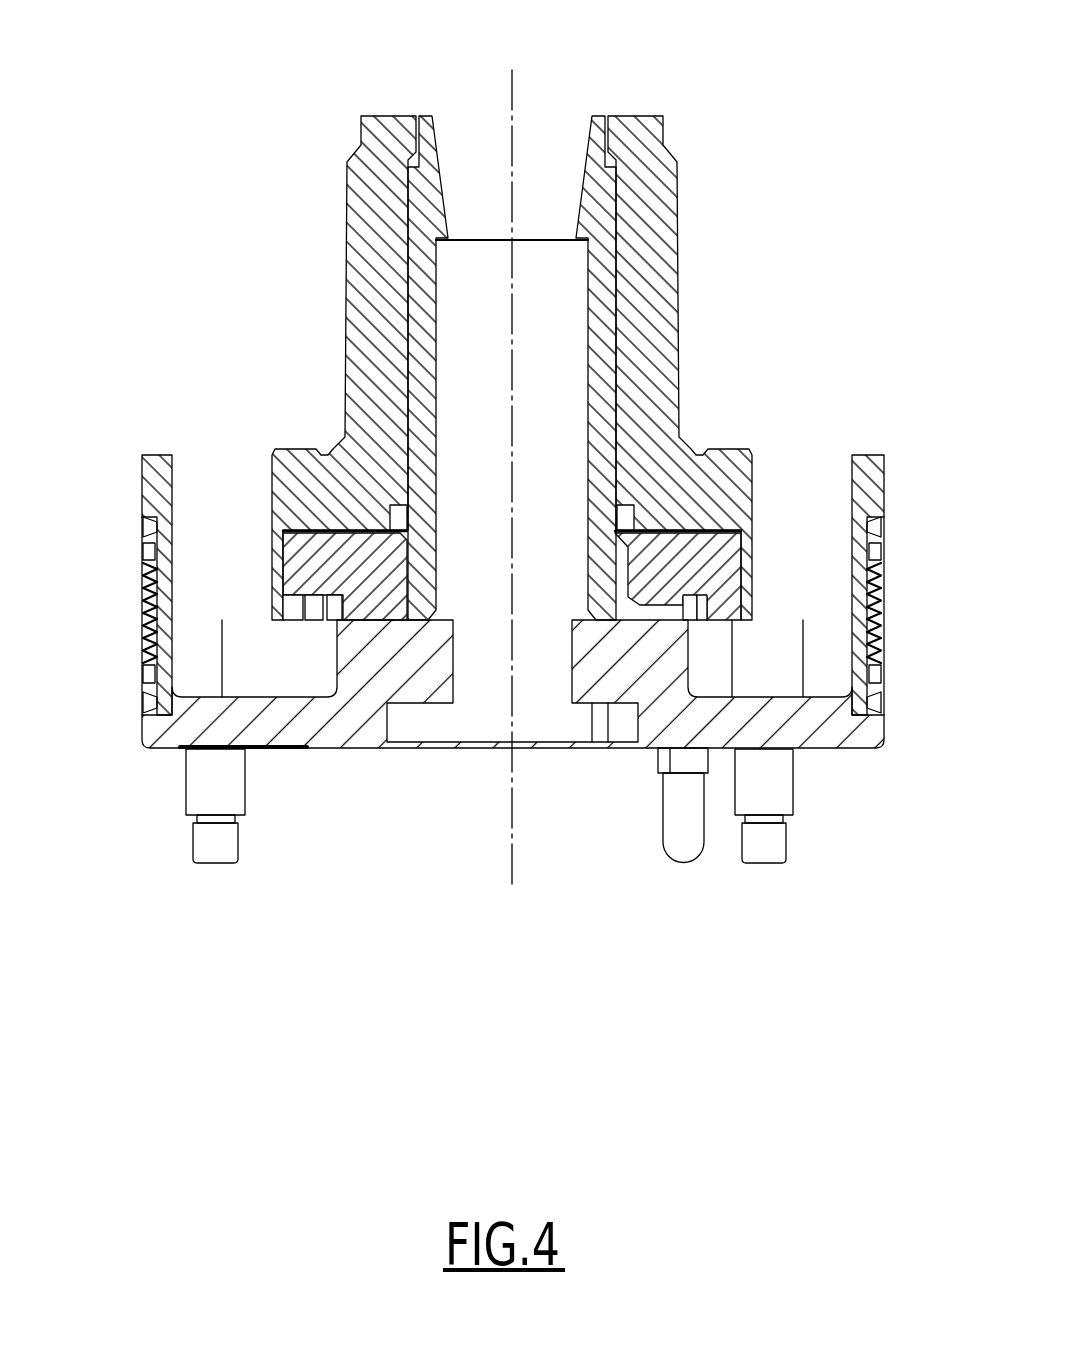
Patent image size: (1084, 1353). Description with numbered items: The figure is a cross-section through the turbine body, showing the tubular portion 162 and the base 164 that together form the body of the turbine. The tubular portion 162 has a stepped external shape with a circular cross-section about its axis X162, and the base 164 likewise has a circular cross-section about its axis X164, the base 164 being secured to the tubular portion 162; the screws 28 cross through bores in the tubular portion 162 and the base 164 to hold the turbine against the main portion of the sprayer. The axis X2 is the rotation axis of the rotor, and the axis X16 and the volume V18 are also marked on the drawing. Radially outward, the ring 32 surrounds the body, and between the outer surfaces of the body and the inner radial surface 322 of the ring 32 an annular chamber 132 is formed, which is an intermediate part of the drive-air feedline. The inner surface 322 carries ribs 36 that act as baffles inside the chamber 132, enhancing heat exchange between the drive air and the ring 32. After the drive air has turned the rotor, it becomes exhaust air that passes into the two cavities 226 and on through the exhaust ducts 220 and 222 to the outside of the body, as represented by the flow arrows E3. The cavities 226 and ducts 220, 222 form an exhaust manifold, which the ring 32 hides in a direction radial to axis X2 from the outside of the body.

The tubular portion 162 is at (658, 410).
The axis of tubular portion X162 is at (512, 318).
The base 164 is at (858, 733).
The axis of base X164 is at (488, 700).
The axis X2 is at (513, 88).
The axis X16 is at (513, 843).
The internal volume / passage V18 is at (553, 432).
The exhaust duct 220 is at (197, 490).
The exhaust duct 222 is at (784, 497).
The inner radial surface of ring 322 is at (875, 483).
The ribs 36 is at (147, 597).
The ring 32 is at (147, 610).
The annular chamber 132 is at (867, 648).
The cavities 226 is at (278, 655).
The screws 28 is at (208, 778).
The exhaust air flow arrows E3 is at (227, 417).